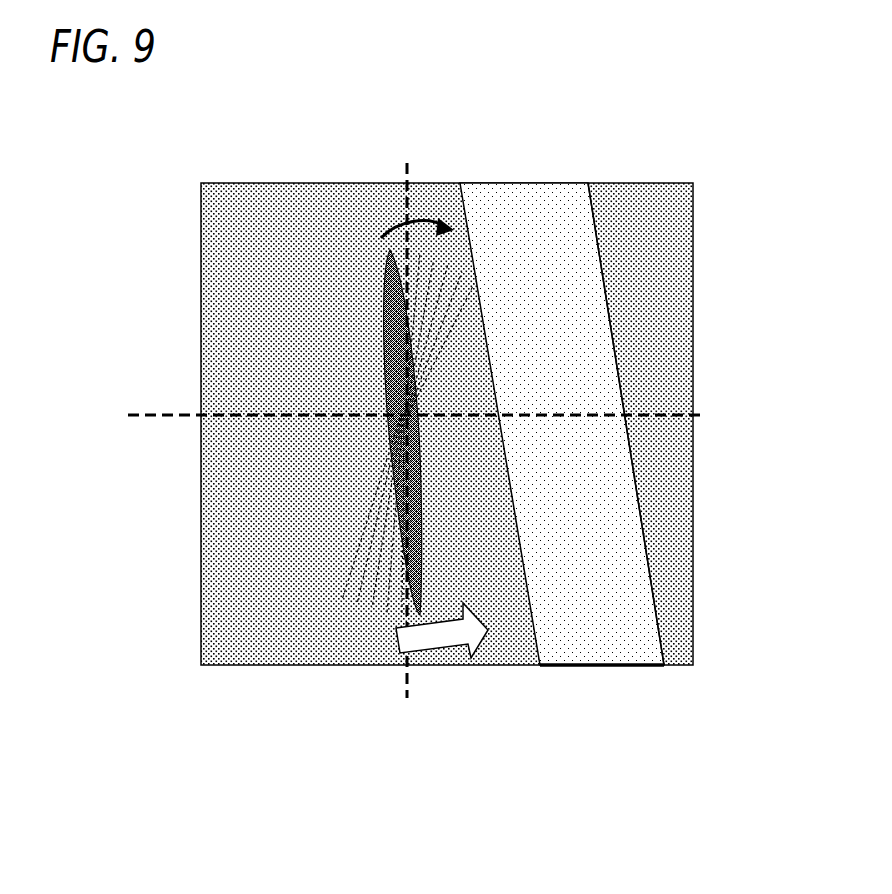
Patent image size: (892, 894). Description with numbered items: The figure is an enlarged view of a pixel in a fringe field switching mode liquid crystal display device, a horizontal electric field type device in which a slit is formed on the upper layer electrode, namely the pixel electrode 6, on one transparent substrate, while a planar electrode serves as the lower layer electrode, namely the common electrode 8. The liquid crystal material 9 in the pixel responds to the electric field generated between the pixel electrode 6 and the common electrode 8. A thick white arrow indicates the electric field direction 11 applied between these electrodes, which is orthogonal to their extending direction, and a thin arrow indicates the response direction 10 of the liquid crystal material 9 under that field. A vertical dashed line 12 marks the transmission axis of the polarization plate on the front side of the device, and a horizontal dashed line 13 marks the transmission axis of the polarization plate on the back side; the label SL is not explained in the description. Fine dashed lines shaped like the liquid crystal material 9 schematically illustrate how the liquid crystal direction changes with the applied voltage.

The pixel electrode 6 is at (595, 450).
The common electrode 8 is at (208, 247).
The liquid crystal material 9 is at (377, 250).
The response direction 10 is at (446, 221).
The electric field direction 11 is at (452, 623).
The dashed line 12 is at (395, 170).
The dashed line 13 is at (625, 407).
The scanning line SL is at (527, 612).